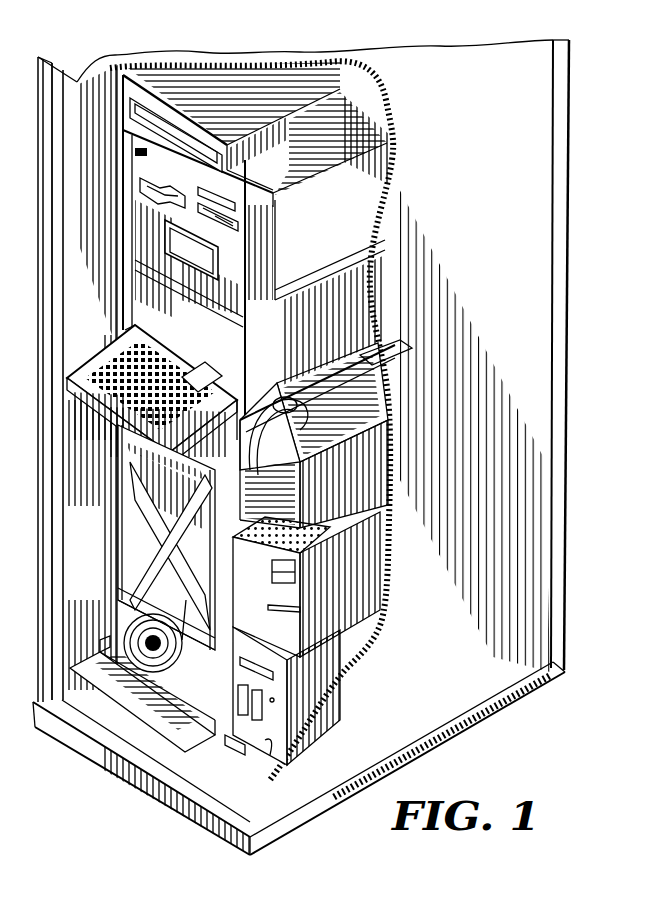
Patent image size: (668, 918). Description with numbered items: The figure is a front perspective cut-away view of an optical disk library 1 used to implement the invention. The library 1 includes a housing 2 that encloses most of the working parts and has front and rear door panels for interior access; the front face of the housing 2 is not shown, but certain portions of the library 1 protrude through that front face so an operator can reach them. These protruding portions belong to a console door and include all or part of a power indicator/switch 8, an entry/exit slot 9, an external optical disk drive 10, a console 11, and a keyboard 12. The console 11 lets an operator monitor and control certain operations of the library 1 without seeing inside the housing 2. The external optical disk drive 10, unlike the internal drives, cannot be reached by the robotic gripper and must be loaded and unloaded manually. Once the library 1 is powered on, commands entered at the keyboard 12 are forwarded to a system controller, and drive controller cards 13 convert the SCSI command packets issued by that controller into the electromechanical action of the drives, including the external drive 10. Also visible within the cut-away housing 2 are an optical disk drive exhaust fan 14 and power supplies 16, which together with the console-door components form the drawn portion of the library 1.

The library 1 is at (590, 68).
The housing 2 is at (572, 140).
The power indicator/switch 8 is at (170, 186).
The entry/exit slot 9 is at (200, 195).
The external optical disk drive 10 is at (255, 232).
The console 11 is at (215, 290).
The keyboard 12 is at (173, 400).
The drive controller cards 13 is at (310, 466).
The optical disk drive exhaust fan 14 is at (125, 622).
The power supplies 16 is at (352, 610).